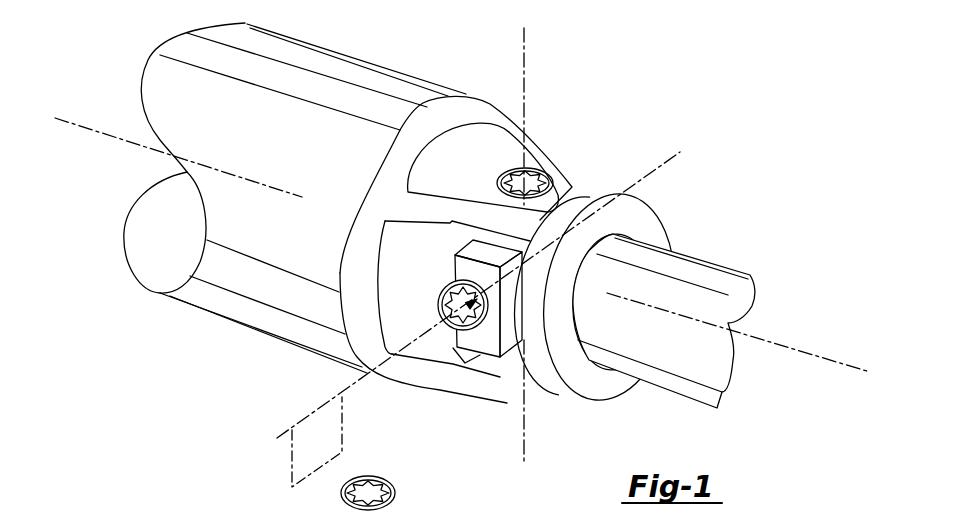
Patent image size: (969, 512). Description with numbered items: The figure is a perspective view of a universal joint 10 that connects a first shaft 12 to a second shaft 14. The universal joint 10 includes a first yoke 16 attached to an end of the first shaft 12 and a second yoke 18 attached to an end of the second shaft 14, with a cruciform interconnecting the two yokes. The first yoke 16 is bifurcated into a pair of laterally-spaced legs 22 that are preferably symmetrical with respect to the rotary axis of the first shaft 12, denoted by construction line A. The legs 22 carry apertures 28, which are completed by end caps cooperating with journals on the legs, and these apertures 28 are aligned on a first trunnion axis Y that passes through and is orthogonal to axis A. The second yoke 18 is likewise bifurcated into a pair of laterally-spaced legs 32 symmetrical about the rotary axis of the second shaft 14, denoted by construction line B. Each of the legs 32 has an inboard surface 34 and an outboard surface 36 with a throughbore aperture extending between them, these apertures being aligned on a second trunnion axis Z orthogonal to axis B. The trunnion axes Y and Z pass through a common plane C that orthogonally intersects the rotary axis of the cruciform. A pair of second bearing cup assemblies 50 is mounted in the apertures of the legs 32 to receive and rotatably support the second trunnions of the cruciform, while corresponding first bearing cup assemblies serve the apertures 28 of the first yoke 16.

The universal joint 10 is at (629, 21).
The first shaft 12 is at (670, 352).
The second shaft 14 is at (264, 65).
The first yoke 16 is at (480, 345).
The second yoke 18 is at (497, 154).
The legs 22 is at (477, 253).
The apertures 28 is at (458, 327).
The legs 32 is at (520, 378).
The inboard surface 34 is at (498, 368).
The outboard surface 36 is at (468, 178).
The second bearing cup assemblies 50 is at (422, 511).